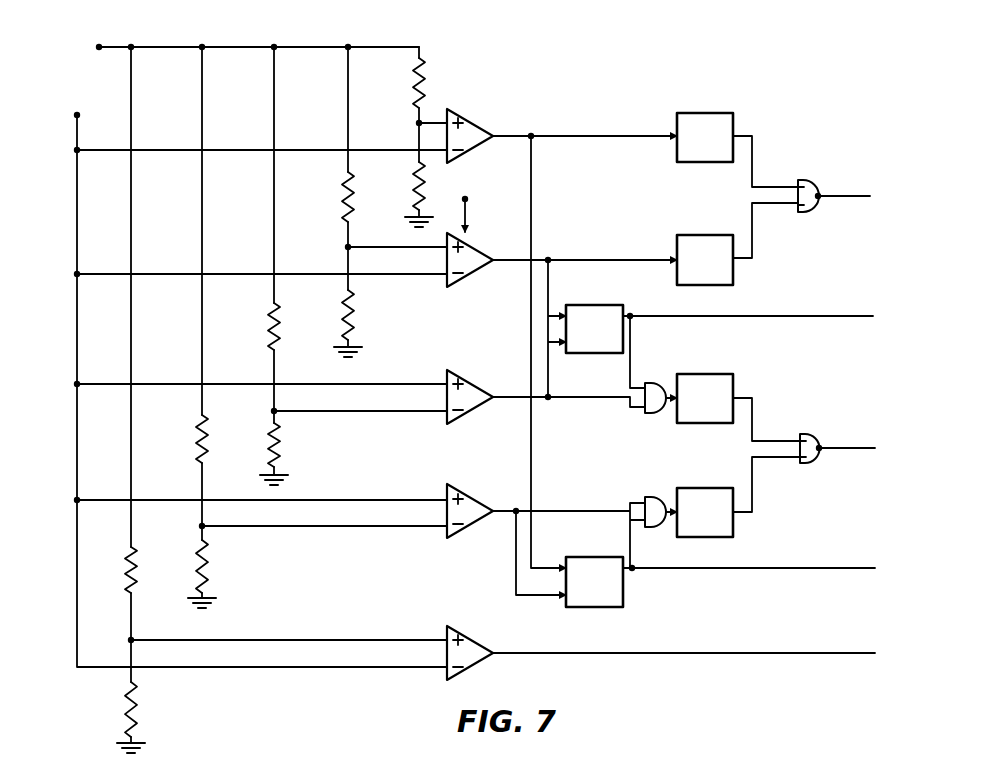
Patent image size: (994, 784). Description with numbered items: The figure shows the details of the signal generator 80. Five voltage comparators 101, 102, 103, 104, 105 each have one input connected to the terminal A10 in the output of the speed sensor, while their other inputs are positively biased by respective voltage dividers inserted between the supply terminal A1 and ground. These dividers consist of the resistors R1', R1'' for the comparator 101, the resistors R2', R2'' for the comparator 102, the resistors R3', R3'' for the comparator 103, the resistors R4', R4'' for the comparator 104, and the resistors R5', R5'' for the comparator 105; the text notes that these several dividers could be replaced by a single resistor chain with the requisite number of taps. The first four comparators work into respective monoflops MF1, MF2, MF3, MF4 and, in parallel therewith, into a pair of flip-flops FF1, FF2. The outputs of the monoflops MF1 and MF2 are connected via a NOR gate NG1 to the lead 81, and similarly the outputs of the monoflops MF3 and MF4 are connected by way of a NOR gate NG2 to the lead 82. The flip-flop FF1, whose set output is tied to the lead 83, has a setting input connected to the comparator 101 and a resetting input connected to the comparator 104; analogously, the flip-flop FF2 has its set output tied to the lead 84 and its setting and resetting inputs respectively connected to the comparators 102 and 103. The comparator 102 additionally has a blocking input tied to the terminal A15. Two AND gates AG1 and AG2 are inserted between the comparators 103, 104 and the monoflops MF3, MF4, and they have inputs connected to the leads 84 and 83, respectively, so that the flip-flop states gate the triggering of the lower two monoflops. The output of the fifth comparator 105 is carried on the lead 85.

The signal generator 80 is at (236, 374).
The lead 81 is at (854, 197).
The lead 82 is at (857, 449).
The lead 83 is at (764, 569).
The lead 84 is at (763, 317).
The lead 85 is at (695, 654).
The voltage comparator 101 is at (462, 118).
The voltage comparator 102 is at (470, 278).
The voltage comparator 103 is at (470, 380).
The voltage comparator 104 is at (461, 493).
The voltage comparator 105 is at (460, 631).
The supply terminal A1 is at (99, 46).
The terminal A10 is at (48, 448).
The terminal A15 is at (468, 199).
The resistor R1' is at (409, 104).
The resistor R1'' is at (400, 194).
The resistor R2' is at (372, 168).
The resistor R2'' is at (362, 323).
The resistor R3' is at (357, 235).
The resistor R3'' is at (290, 453).
The resistor R4' is at (321, 293).
The resistor R4'' is at (221, 574).
The resistor R5' is at (286, 364).
The resistor R5'' is at (149, 717).
The monoflop MF1 is at (700, 112).
The monoflop MF2 is at (700, 234).
The monoflop MF3 is at (700, 373).
The monoflop MF4 is at (700, 487).
The flip-flop FF1 is at (585, 556).
The flip-flop FF2 is at (587, 304).
The AND gate AG1 is at (652, 416).
The AND gate AG2 is at (654, 530).
The NOR gate NG1 is at (808, 180).
The NOR gate NG2 is at (804, 434).